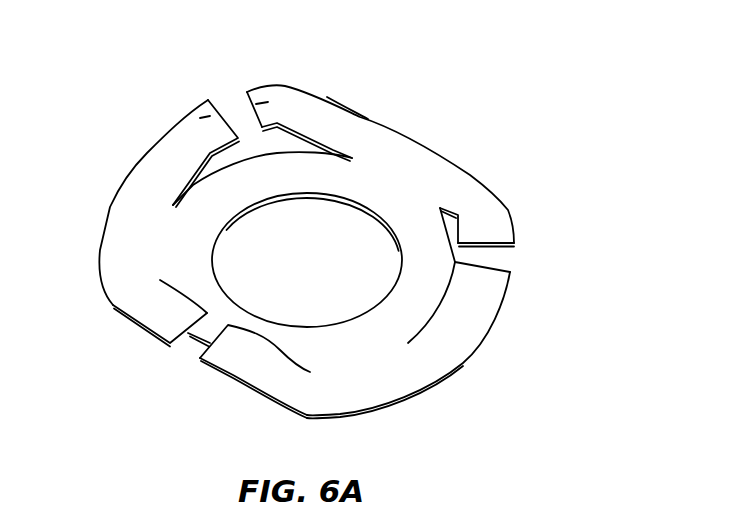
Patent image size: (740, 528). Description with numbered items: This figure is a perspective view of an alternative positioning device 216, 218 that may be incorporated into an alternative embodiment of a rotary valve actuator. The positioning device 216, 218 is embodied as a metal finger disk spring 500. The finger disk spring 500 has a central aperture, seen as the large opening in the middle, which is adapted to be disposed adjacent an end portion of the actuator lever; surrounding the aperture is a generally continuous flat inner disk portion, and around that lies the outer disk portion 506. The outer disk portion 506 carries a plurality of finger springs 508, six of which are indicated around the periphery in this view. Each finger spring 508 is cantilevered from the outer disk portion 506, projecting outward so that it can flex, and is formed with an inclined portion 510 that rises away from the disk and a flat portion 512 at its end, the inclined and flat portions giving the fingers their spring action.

The positioning device 216 is at (347, 223).
The positioning device 218 is at (347, 223).
The finger disk spring 500 is at (312, 223).
The outer disk portion 506 is at (374, 129).
The finger springs 508 is at (281, 78).
The inclined portion 510 is at (331, 116).
The flat portion 512 is at (268, 104).